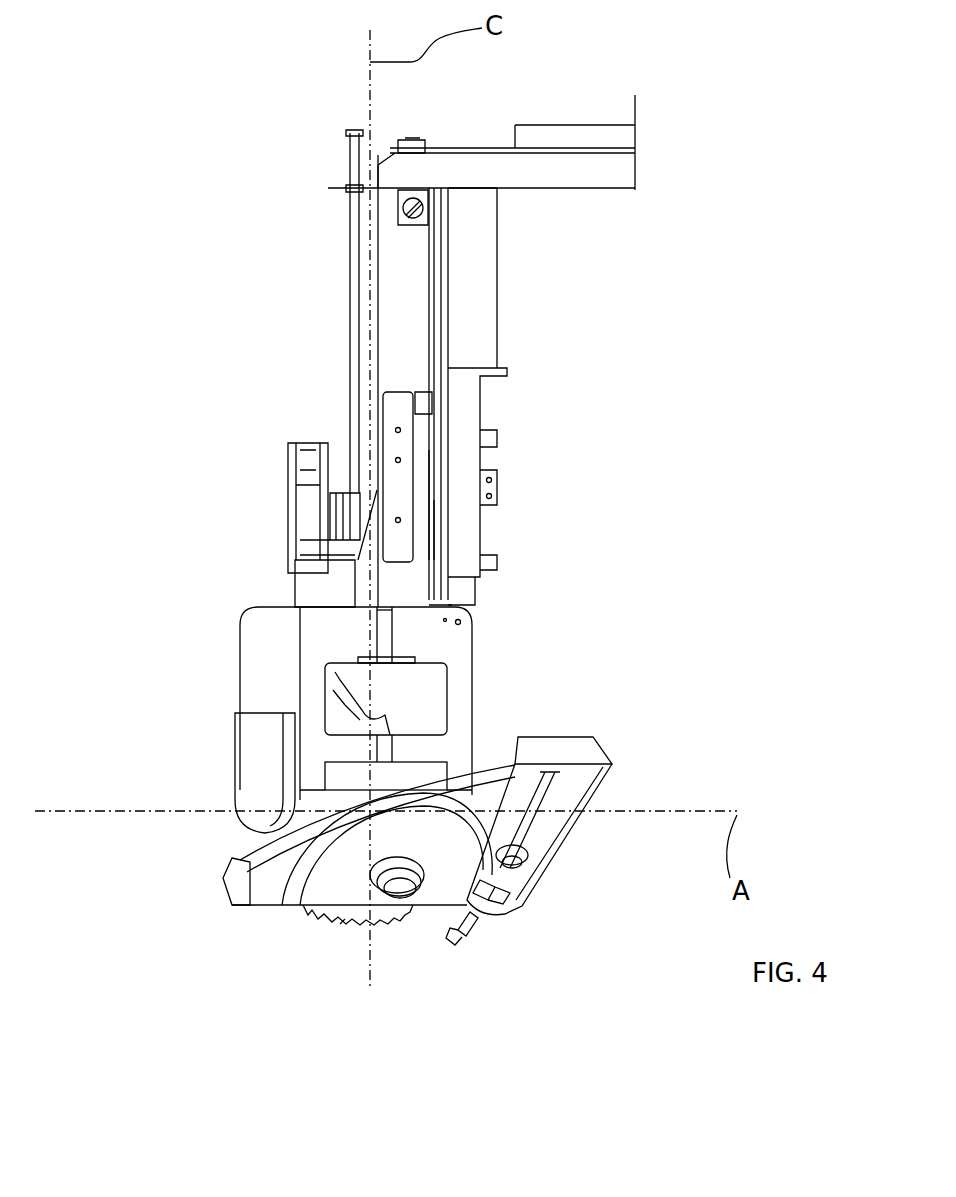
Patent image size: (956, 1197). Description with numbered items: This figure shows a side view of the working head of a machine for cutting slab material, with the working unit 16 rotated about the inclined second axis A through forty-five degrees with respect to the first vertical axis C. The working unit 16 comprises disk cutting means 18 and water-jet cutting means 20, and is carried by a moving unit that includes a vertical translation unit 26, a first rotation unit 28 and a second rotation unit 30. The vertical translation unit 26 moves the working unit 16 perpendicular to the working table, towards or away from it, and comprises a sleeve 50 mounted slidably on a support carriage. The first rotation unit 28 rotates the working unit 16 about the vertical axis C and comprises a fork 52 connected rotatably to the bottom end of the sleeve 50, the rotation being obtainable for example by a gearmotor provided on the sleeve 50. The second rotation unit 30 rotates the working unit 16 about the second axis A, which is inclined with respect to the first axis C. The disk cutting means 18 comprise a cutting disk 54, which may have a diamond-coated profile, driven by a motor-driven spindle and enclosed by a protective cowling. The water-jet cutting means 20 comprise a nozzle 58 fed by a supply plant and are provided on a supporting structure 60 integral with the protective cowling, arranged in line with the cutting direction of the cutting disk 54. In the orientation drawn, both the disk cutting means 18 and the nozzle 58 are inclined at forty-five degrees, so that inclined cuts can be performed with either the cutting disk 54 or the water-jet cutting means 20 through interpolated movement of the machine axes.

The working unit 16 is at (607, 798).
The disk cutting means 18 is at (307, 935).
The water-jet cutting means 20 is at (542, 892).
The vertical translation unit 26 is at (343, 328).
The first rotation unit 28 is at (355, 622).
The second rotation unit 30 is at (233, 835).
The sleeve 50 is at (493, 322).
The fork 52 is at (248, 678).
The cutting disk 54 is at (345, 923).
The nozzle 58 is at (455, 940).
The supporting structure 60 is at (507, 778).